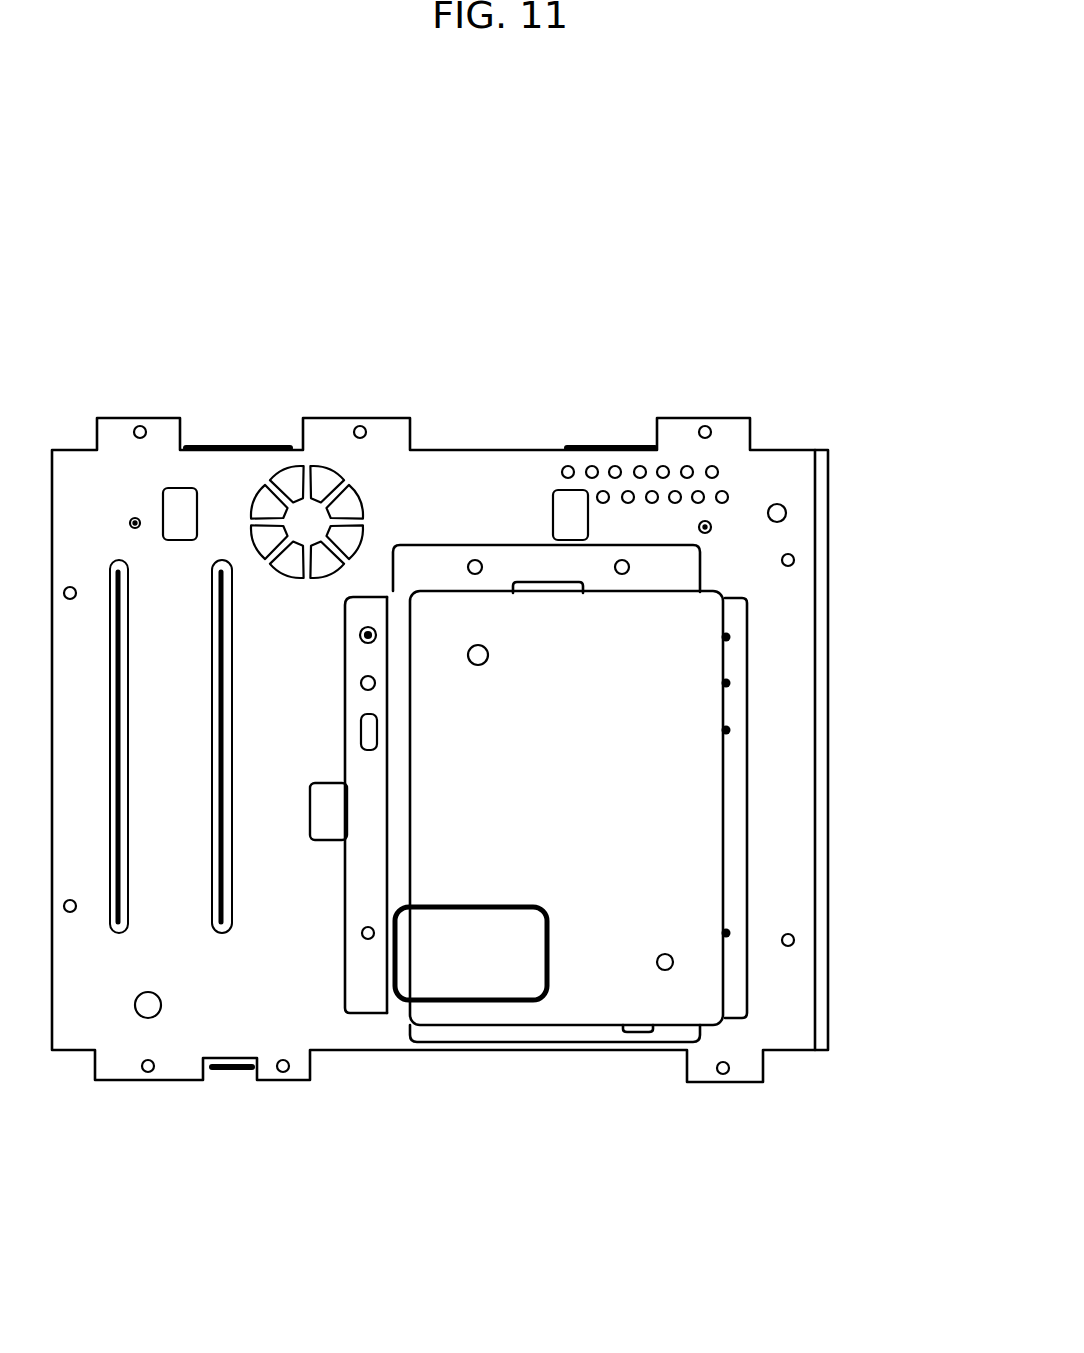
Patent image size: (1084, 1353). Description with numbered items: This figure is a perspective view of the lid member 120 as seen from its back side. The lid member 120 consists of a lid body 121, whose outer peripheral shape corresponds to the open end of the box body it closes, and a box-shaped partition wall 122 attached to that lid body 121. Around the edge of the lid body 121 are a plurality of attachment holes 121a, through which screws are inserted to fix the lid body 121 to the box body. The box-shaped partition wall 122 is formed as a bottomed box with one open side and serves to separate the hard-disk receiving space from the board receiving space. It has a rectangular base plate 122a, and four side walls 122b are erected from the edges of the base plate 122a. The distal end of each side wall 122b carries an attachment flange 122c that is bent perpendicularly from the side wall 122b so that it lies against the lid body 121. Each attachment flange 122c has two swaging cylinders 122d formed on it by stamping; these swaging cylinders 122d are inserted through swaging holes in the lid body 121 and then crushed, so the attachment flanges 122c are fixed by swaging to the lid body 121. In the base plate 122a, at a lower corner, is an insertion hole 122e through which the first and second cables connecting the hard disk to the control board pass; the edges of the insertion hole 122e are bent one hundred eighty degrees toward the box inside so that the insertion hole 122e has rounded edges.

The lid member 120 is at (893, 676).
The lid body 121 is at (828, 712).
The attachment holes 121a is at (701, 429).
The box-shaped partition wall 122 is at (752, 787).
The base plate 122a is at (690, 677).
The side wall 122b is at (400, 785).
The attachment flange 122c is at (676, 568).
The swaging cylinders 122d is at (618, 561).
The insertion hole 122e is at (475, 952).